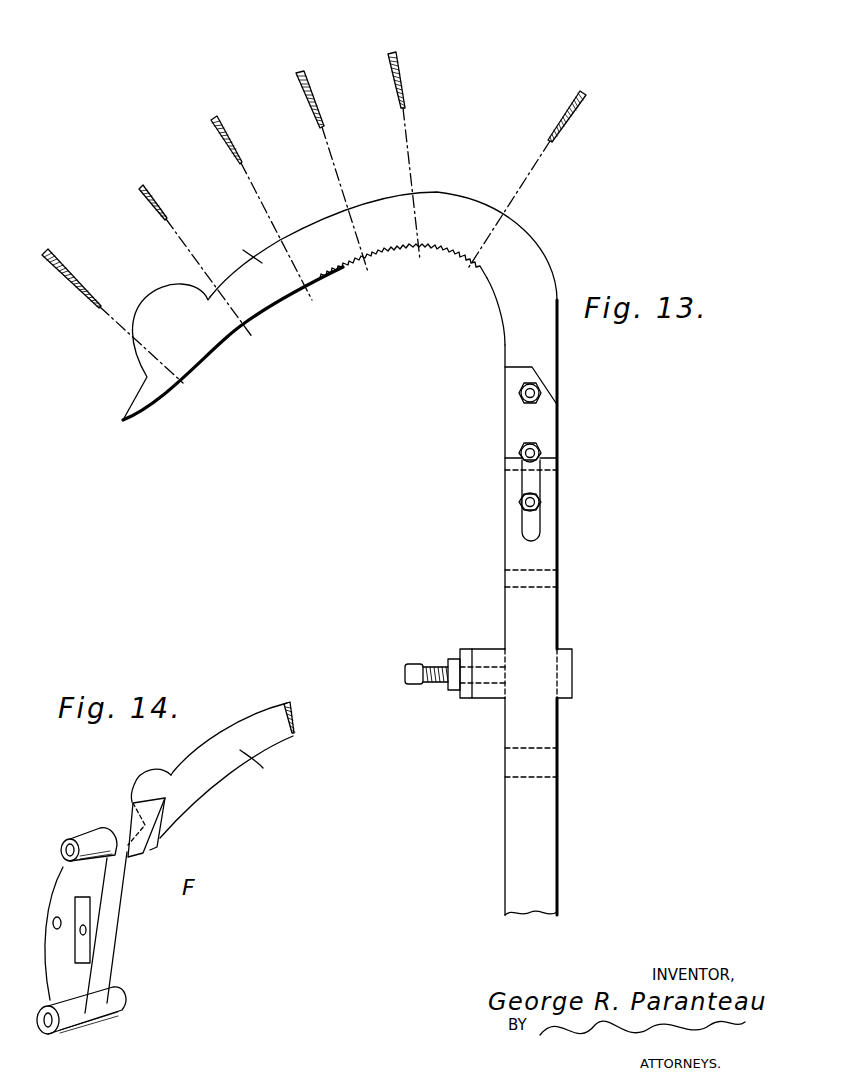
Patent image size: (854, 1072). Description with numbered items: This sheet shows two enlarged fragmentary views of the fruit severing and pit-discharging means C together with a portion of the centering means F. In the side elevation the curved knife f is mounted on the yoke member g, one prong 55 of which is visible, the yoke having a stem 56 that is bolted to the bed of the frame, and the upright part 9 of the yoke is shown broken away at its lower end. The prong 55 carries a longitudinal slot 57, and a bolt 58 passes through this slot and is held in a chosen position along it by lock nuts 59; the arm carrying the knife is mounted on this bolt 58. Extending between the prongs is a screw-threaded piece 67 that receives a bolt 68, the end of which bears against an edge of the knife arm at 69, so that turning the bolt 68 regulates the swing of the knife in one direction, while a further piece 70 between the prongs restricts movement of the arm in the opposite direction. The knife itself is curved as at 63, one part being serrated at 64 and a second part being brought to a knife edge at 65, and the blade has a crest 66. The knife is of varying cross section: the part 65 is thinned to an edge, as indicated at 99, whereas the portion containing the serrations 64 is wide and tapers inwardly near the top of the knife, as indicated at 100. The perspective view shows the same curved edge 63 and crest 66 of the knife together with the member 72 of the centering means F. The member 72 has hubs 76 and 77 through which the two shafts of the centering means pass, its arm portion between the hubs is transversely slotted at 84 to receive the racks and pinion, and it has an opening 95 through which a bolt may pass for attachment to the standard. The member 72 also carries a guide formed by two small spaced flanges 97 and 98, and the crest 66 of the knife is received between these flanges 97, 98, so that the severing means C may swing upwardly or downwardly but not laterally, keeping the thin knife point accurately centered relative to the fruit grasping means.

In FIG. 13, the vertical bar 9 is at (545, 609).
In FIG. 13, the prong 55 is at (540, 722).
In FIG. 13, the stem 56 is at (540, 884).
In FIG. 13, the longitudinal slot 57 is at (535, 475).
In FIG. 13, the bolt 58 is at (540, 505).
In FIG. 13, the lock nuts 59 is at (538, 508).
In FIG. 13, the curved portion of knife 63 is at (312, 282).
In FIG. 14, the curved portion of knife 63 is at (220, 775).
In FIG. 13, the serrations 64 is at (400, 253).
In FIG. 13, the knife-edge portion 65 is at (203, 362).
In FIG. 13, the crest 66 is at (137, 353).
In FIG. 14, the crest 66 is at (140, 787).
In FIG. 13, the screw-threaded piece 67 is at (486, 655).
In FIG. 13, the bolt 68 is at (433, 685).
In FIG. 13, the arm edge engagement point 69 is at (503, 683).
In FIG. 13, the piece 70 is at (568, 660).
In FIG. 14, the member 72 is at (110, 927).
In FIG. 14, the hub 76 is at (62, 840).
In FIG. 14, the hub 77 is at (50, 1035).
In FIG. 14, the transverse slot 84 is at (80, 935).
In FIG. 14, the opening 95 is at (52, 920).
In FIG. 14, the flange 97 is at (140, 815).
In FIG. 14, the flange 98 is at (160, 835).
In FIG. 13, the sharpened edge 99 is at (212, 123).
In FIG. 13, the inward taper 100 is at (580, 100).